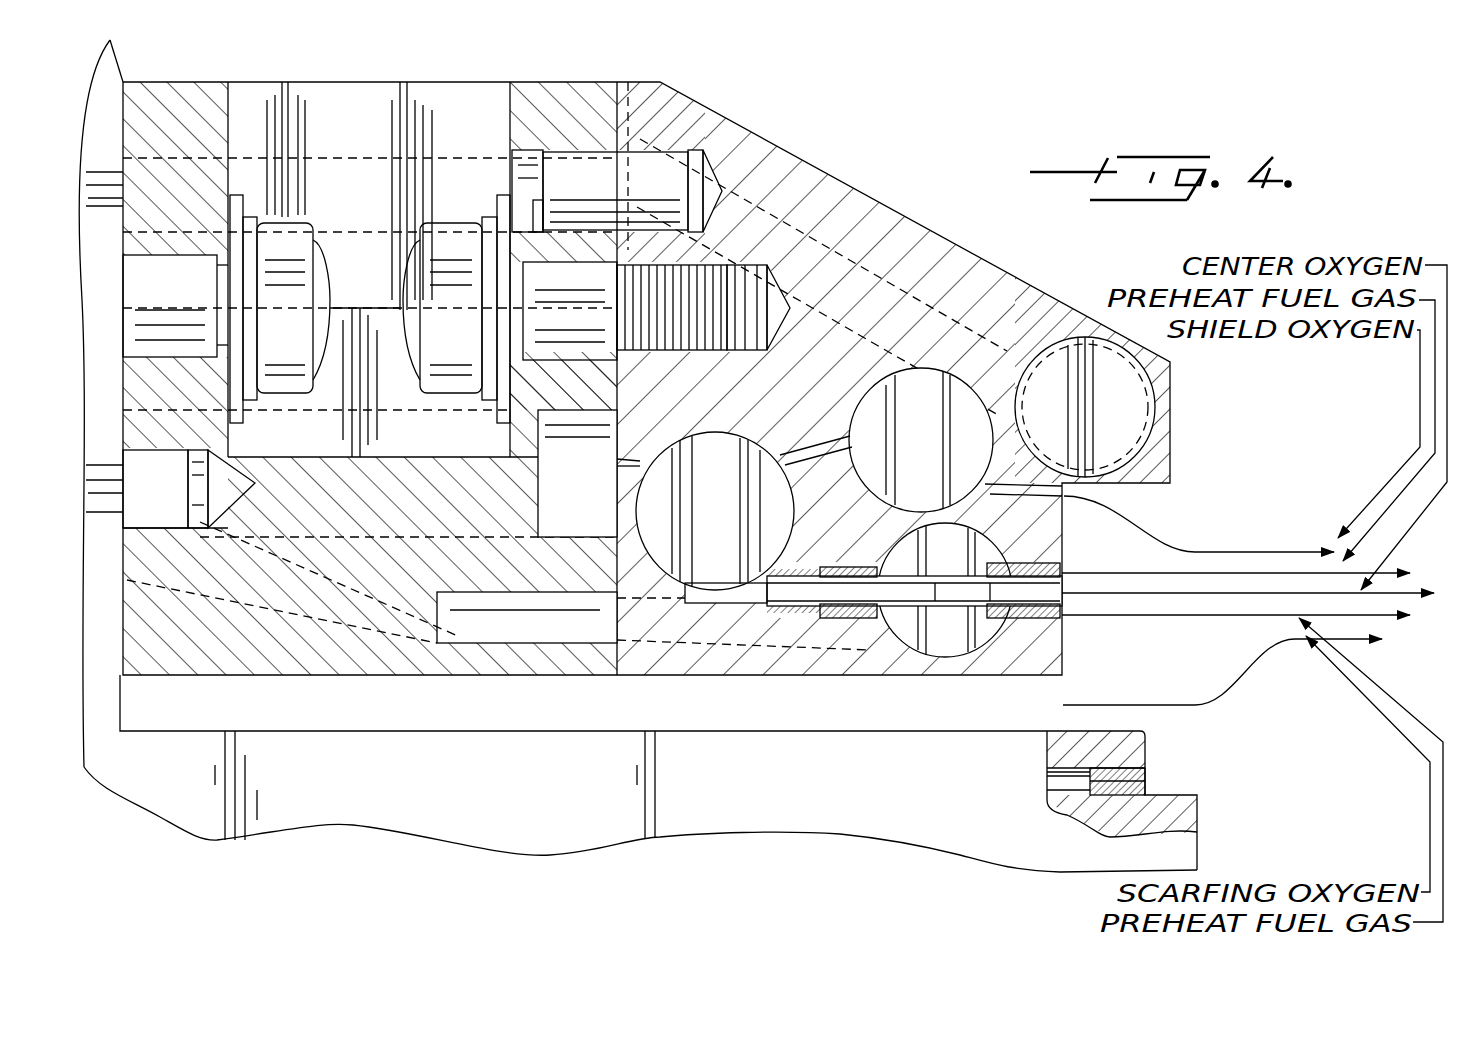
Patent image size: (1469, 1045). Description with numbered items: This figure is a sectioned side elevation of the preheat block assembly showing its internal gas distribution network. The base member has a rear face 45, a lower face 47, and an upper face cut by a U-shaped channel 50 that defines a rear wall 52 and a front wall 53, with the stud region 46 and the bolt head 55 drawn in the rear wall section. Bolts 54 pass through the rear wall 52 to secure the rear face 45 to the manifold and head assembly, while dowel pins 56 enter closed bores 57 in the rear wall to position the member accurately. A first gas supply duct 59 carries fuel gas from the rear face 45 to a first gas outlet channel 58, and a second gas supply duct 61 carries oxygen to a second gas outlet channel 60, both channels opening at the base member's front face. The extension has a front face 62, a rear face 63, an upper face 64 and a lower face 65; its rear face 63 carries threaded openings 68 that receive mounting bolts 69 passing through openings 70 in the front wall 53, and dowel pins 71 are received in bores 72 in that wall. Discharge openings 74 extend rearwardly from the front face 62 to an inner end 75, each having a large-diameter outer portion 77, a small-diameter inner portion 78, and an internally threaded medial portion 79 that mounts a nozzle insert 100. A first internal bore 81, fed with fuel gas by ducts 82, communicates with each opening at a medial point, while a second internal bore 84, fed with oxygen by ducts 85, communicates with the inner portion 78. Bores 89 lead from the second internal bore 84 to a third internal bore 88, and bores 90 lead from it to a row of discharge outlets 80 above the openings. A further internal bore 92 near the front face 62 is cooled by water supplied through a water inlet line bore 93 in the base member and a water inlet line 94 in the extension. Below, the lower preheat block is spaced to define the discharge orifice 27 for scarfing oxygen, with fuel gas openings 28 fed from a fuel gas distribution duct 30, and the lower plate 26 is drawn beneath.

The lower plate 26 is at (528, 712).
The discharge orifice 27 is at (1060, 688).
The openings 28 is at (1147, 788).
The fuel gas distribution duct 30 is at (1070, 790).
The rear face 45 is at (97, 200).
The stud bore 46 is at (445, 82).
The lower face 47 is at (383, 676).
The U-shaped channel 50 is at (232, 110).
The rear wall 52 is at (160, 141).
The front wall 53 is at (549, 141).
The bolts 54 is at (338, 262).
The bolt 55 is at (172, 350).
The dowel pins 56 is at (140, 465).
The closed bores 57 is at (225, 485).
The first gas outlet channel 58 is at (588, 645).
The first gas supply duct 59 is at (320, 607).
The second gas outlet channel 60 is at (556, 515).
The second gas supply duct 61 is at (512, 528).
The front face 62 is at (1172, 442).
The rear face 63 is at (617, 108).
The upper face 64 is at (812, 162).
The lower face 65 is at (775, 675).
The threaded openings 68 is at (760, 333).
The mounting bolts 69 is at (408, 318).
The openings 70 is at (575, 357).
The dowel pins 71 is at (575, 192).
The bores 72 is at (533, 207).
The discharge openings 74 is at (1040, 565).
The inner end 75 is at (700, 600).
The outer portion 77 is at (1030, 620).
The inner portion 78 is at (720, 607).
The medial portion 79 is at (775, 607).
The discharge outlets 80 is at (1065, 498).
The first internal bore 81 is at (916, 558).
The ducts 82 is at (875, 650).
The second internal bore 84 is at (698, 513).
The ducts 85 is at (617, 462).
The third internal bore 88 is at (904, 451).
The bores 89 is at (830, 447).
The bores 90 is at (1022, 480).
The further internal bore 92 is at (1105, 415).
The water inlet line bore 93 is at (318, 156).
The water inlet line 94 is at (1028, 333).
The nozzle insert 100 is at (950, 620).